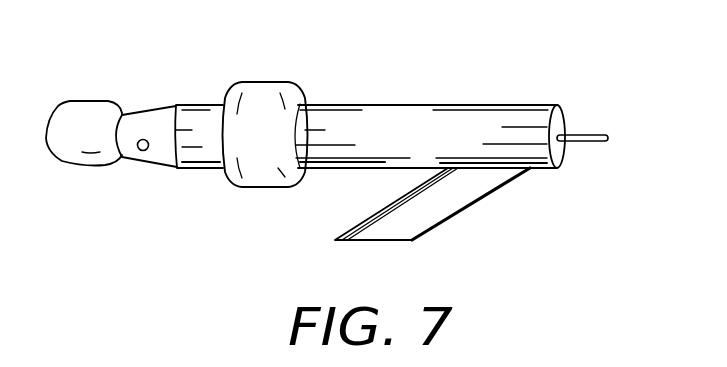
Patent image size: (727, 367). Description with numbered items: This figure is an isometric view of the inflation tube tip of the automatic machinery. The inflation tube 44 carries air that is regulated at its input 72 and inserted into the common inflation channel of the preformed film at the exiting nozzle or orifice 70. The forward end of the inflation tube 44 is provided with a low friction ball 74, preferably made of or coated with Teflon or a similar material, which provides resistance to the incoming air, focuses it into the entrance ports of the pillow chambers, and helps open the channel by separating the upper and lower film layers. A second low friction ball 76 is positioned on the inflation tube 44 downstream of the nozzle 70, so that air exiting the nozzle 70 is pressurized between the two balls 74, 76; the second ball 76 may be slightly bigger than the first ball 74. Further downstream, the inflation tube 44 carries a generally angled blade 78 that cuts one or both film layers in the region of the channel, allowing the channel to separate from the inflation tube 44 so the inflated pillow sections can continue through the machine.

The inflation tube 44 is at (407, 104).
The nozzle 70 is at (137, 150).
The input 72 is at (587, 138).
The low friction ball 74 is at (84, 101).
The second low friction ball 76 is at (260, 92).
The blade 78 is at (432, 207).